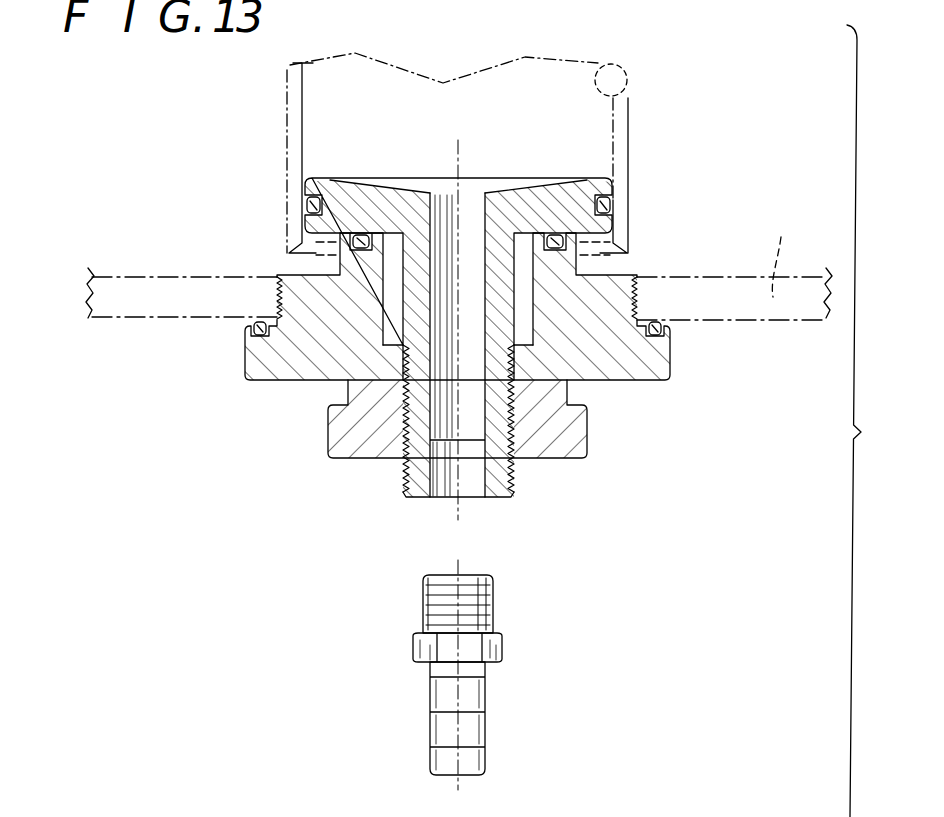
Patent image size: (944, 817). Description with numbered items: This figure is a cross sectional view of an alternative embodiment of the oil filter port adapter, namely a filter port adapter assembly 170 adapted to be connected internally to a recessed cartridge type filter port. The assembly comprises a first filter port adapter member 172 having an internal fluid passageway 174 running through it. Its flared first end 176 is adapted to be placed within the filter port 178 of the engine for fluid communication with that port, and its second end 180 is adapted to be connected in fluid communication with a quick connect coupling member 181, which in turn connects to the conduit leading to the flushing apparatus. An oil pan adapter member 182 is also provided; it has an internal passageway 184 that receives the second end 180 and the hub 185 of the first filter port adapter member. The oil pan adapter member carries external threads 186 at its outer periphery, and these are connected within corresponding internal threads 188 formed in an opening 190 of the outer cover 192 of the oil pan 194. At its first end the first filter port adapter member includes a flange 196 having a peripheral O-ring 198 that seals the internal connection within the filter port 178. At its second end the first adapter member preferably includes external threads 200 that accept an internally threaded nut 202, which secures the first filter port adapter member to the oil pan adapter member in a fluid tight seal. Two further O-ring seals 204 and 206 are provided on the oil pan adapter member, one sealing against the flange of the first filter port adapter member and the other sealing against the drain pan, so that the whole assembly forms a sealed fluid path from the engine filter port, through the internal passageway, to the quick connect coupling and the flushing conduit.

The filter port adapter assembly 170 is at (150, 213).
The first filter port adapter member 172 is at (373, 196).
The internal fluid passageway 174 is at (473, 200).
The flared first end 176 is at (597, 178).
The filter port 178 is at (598, 62).
The second end 180 is at (495, 498).
The quick connect coupling member 181 is at (487, 687).
The oil pan adapter member 182 is at (672, 366).
The internal passageway 184 is at (522, 352).
The hub 185 is at (385, 345).
The external threads 186 is at (640, 280).
The internal threads 188 is at (277, 290).
The opening 190 is at (648, 222).
The outer cover 192 is at (795, 252).
The oil pan 194 is at (745, 352).
The flange 196 is at (327, 178).
The peripheral O-ring 198 is at (308, 198).
The external threads 200 is at (515, 477).
The internally threaded nut 202 is at (358, 460).
The O-ring seal 204 is at (352, 242).
The O-ring seal 206 is at (242, 320).